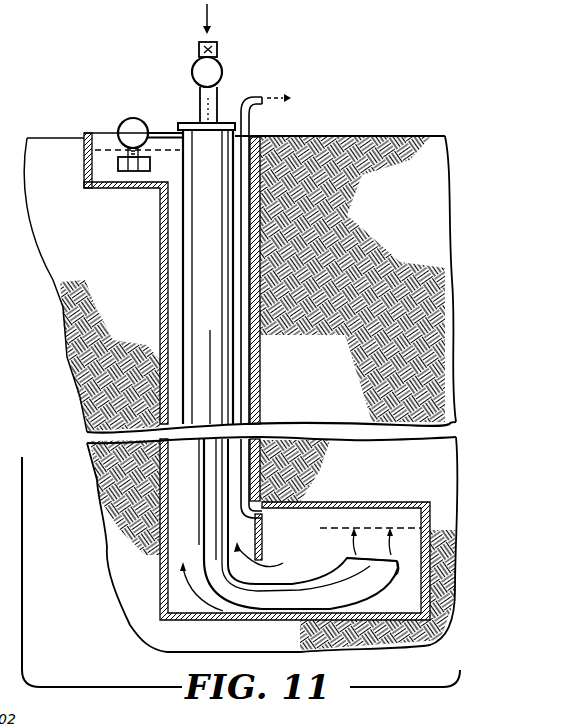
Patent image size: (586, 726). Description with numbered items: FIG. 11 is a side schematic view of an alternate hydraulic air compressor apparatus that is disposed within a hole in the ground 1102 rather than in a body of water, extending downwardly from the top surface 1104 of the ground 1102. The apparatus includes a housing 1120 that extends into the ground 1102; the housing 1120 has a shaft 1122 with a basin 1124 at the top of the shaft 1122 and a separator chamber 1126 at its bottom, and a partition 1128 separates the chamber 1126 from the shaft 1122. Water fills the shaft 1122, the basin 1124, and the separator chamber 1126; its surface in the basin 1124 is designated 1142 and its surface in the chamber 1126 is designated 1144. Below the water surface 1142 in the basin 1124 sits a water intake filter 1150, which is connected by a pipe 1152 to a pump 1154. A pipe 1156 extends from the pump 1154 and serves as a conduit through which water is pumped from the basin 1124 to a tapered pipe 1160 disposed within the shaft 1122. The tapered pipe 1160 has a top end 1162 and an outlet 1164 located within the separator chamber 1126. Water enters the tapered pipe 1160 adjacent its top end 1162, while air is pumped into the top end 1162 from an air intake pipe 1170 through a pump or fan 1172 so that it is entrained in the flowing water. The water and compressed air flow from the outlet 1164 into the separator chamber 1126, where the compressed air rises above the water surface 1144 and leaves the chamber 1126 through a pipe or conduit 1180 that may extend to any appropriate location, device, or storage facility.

The ground 1102 is at (376, 156).
The top surface 1104 is at (325, 135).
The housing 1120 is at (268, 307).
The shaft 1122 is at (261, 364).
The basin 1124 is at (132, 188).
The separator chamber 1126 is at (366, 482).
The partition 1128 is at (267, 530).
The surface of the water 1142 is at (100, 132).
The surface of the water 1144 is at (394, 528).
The water intake filter 1150 is at (117, 168).
The pipe 1152 is at (126, 153).
The pump 1154 is at (122, 124).
The pipe 1156 is at (155, 131).
The tapered pipe 1160 is at (186, 247).
The top end 1162 is at (217, 125).
The outlet 1164 is at (346, 558).
The air intake pipe 1170 is at (218, 43).
The pump or fan 1172 is at (192, 68).
The pipe or conduit 1180 is at (264, 228).